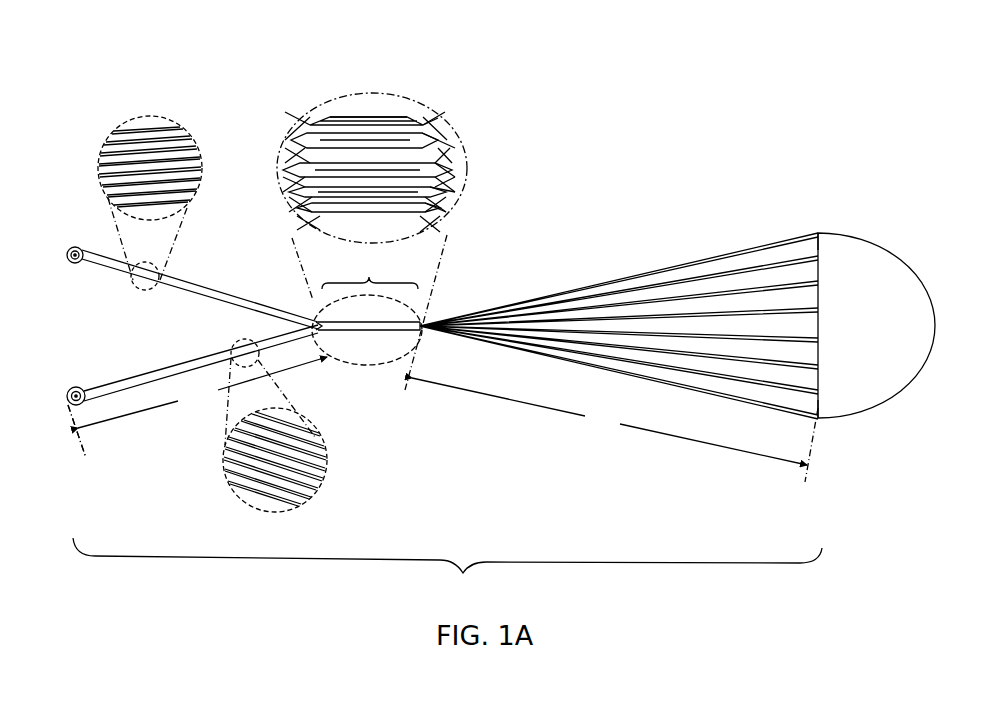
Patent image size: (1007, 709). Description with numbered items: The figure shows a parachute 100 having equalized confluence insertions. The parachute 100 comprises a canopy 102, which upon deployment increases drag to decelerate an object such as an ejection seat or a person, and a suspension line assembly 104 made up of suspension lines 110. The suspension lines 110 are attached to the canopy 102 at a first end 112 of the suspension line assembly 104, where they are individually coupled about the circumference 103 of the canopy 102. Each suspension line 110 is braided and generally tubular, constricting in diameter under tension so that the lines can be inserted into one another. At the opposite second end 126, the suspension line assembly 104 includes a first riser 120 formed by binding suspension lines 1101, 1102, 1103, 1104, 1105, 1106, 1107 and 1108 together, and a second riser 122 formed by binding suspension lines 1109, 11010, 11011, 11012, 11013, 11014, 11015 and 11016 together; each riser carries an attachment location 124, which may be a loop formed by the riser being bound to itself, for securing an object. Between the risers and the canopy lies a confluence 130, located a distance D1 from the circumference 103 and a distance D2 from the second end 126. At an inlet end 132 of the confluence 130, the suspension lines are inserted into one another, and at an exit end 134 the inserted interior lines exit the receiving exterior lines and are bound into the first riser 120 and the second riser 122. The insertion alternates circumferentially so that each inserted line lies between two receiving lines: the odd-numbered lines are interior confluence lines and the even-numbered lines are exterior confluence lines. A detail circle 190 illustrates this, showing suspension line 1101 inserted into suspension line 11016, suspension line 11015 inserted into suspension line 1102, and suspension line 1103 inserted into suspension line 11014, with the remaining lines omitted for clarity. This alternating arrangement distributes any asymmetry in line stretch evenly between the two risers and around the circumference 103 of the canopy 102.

The parachute 100 is at (799, 108).
The canopy 102 is at (850, 243).
The circumference 103 is at (812, 236).
The suspension line assembly 104 is at (447, 569).
The suspension lines 110 is at (672, 267).
The suspension line 1101 is at (440, 187).
The suspension line 1102 is at (445, 140).
The suspension line 1103 is at (432, 120).
The suspension line 1104 is at (185, 165).
The suspension line 1105 is at (102, 172).
The suspension line 1106 is at (185, 187).
The suspension line 1107 is at (107, 197).
The suspension line 1108 is at (175, 205).
The suspension line 1109 is at (232, 430).
The suspension line 11010 is at (305, 425).
The suspension line 11011 is at (232, 455).
The suspension line 11012 is at (310, 442).
The suspension line 11013 is at (233, 480).
The suspension line 11014 is at (340, 120).
The suspension line 11015 is at (447, 165).
The suspension line 11016 is at (450, 205).
The first end 112 is at (812, 398).
The first riser 120 is at (245, 286).
The second riser 122 is at (156, 378).
The attachment location 124 is at (66, 252).
The second end 126 is at (67, 406).
The confluence 130 is at (367, 308).
The inlet end 132 is at (427, 335).
The exit end 134 is at (318, 311).
The circle 190 is at (380, 92).
The distance D1 is at (609, 421).
The distance D2 is at (202, 392).